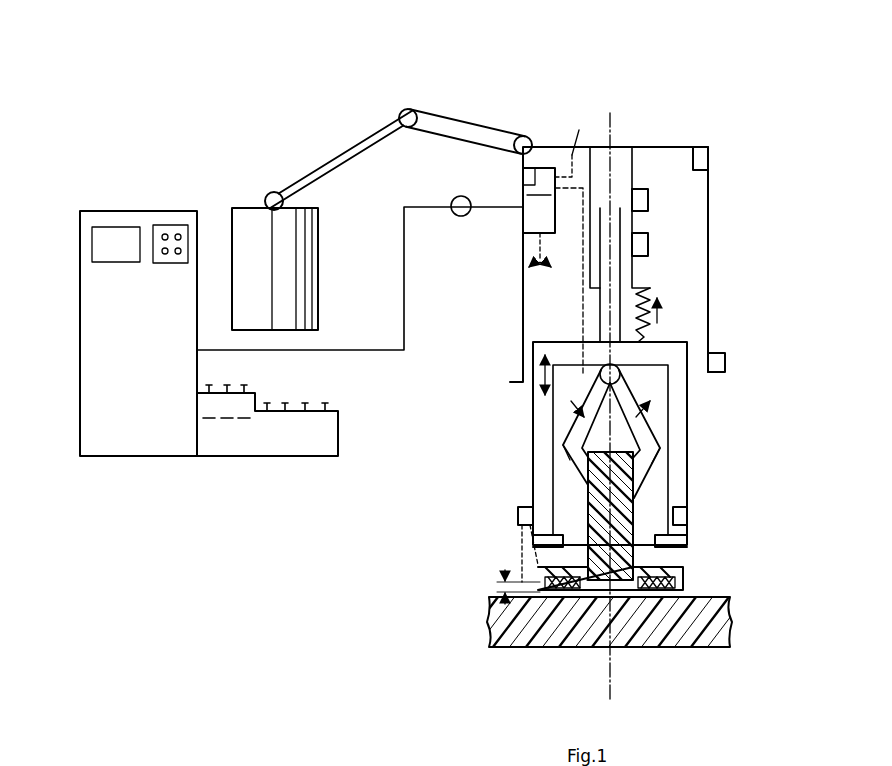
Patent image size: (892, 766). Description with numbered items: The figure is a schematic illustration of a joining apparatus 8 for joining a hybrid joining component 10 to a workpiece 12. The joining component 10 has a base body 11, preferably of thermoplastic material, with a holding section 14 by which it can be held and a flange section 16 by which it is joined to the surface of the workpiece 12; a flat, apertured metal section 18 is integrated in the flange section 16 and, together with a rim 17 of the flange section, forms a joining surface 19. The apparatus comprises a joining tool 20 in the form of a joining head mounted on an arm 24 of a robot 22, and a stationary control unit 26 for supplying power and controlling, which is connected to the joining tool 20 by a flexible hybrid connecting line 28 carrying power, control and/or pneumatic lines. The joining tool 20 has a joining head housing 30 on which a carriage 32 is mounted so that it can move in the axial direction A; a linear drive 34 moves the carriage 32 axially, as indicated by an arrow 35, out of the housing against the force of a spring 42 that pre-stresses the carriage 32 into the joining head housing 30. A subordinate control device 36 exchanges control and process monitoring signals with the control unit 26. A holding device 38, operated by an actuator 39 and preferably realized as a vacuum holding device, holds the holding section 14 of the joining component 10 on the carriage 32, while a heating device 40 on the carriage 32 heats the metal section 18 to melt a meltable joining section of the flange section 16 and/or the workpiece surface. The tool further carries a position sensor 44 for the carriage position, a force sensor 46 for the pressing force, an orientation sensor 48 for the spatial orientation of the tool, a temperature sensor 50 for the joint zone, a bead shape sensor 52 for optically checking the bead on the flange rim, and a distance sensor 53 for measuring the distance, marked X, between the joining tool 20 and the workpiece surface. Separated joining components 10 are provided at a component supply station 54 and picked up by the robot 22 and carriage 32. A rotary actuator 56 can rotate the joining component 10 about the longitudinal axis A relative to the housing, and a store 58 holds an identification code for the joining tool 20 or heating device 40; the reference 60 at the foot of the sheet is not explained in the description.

The joining apparatus 8 is at (730, 157).
The joining component 10 is at (325, 405).
The base body 11 is at (617, 460).
The workpiece 12 is at (720, 625).
The holding section 14 is at (598, 512).
The flange section 16 is at (680, 572).
The rim 17 is at (667, 582).
The metal section 18 is at (665, 567).
The joining surface 19 is at (650, 587).
The joining tool 20 is at (720, 210).
The robot 22 is at (258, 215).
The arm 24 is at (445, 127).
The control unit 26 is at (110, 325).
The hybrid connecting line 28 is at (400, 354).
The joining head housing 30 is at (708, 263).
The carriage 32 is at (680, 338).
The linear drive 34 is at (579, 130).
The arrow 35 is at (541, 377).
The subordinate control device 36 is at (530, 218).
The holding device 38 is at (627, 402).
The actuator 39 is at (583, 318).
The heating device 40 is at (533, 507).
The spring 42 is at (645, 330).
The position sensor 44 is at (652, 195).
The force sensor 46 is at (648, 245).
The orientation sensor 48 is at (697, 157).
The temperature sensor 50 is at (687, 513).
The bead shape sensor 52 is at (517, 520).
The distance sensor 53 is at (718, 358).
The component supply station 54 is at (252, 433).
The rotary actuator 56 is at (543, 272).
The store 58 is at (531, 170).
The reference 60 is at (434, 758).
The axial direction A is at (612, 128).
The distance X is at (518, 577).